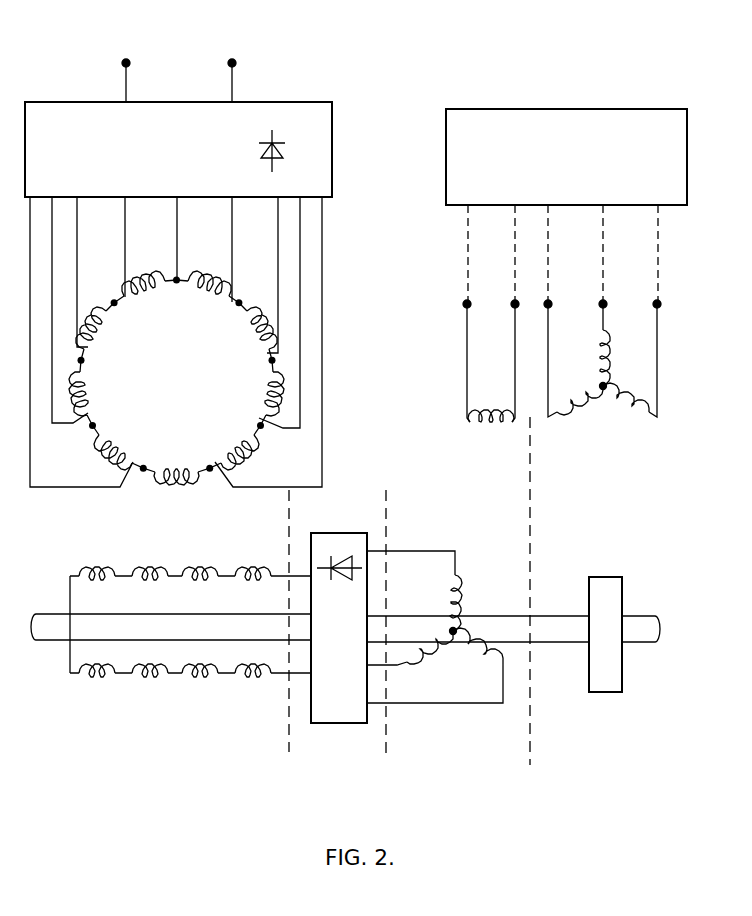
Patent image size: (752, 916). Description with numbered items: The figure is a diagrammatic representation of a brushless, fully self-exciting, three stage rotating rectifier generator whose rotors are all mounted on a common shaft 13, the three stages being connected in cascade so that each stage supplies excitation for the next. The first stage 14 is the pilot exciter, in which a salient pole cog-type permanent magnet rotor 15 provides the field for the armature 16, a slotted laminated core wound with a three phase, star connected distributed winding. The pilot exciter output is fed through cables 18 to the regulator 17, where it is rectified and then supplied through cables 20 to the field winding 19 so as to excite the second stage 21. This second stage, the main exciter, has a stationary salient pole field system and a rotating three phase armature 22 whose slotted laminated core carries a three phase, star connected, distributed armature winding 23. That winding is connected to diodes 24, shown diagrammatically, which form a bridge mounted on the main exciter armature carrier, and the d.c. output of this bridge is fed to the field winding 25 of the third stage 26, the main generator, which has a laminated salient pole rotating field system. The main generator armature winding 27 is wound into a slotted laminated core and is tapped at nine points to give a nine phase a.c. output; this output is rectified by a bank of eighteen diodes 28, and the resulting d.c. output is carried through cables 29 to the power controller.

The common shaft 13 is at (548, 647).
The first stage 14 is at (616, 645).
The permanent magnet rotor 15 is at (593, 577).
The armature 16 is at (584, 380).
The regulator 17 is at (516, 109).
The cables 18 is at (657, 250).
The field winding 19 is at (490, 428).
The cables 20 is at (515, 252).
The second stage 21 is at (435, 668).
The rotating three phase armature 22 is at (465, 594).
The armature winding 23 is at (472, 652).
The diodes 24 is at (325, 727).
The field winding 25 is at (195, 566).
The third stage 26 is at (190, 644).
The armature winding 27 is at (257, 390).
The diode bank 28 is at (332, 162).
The cables 29 is at (232, 80).